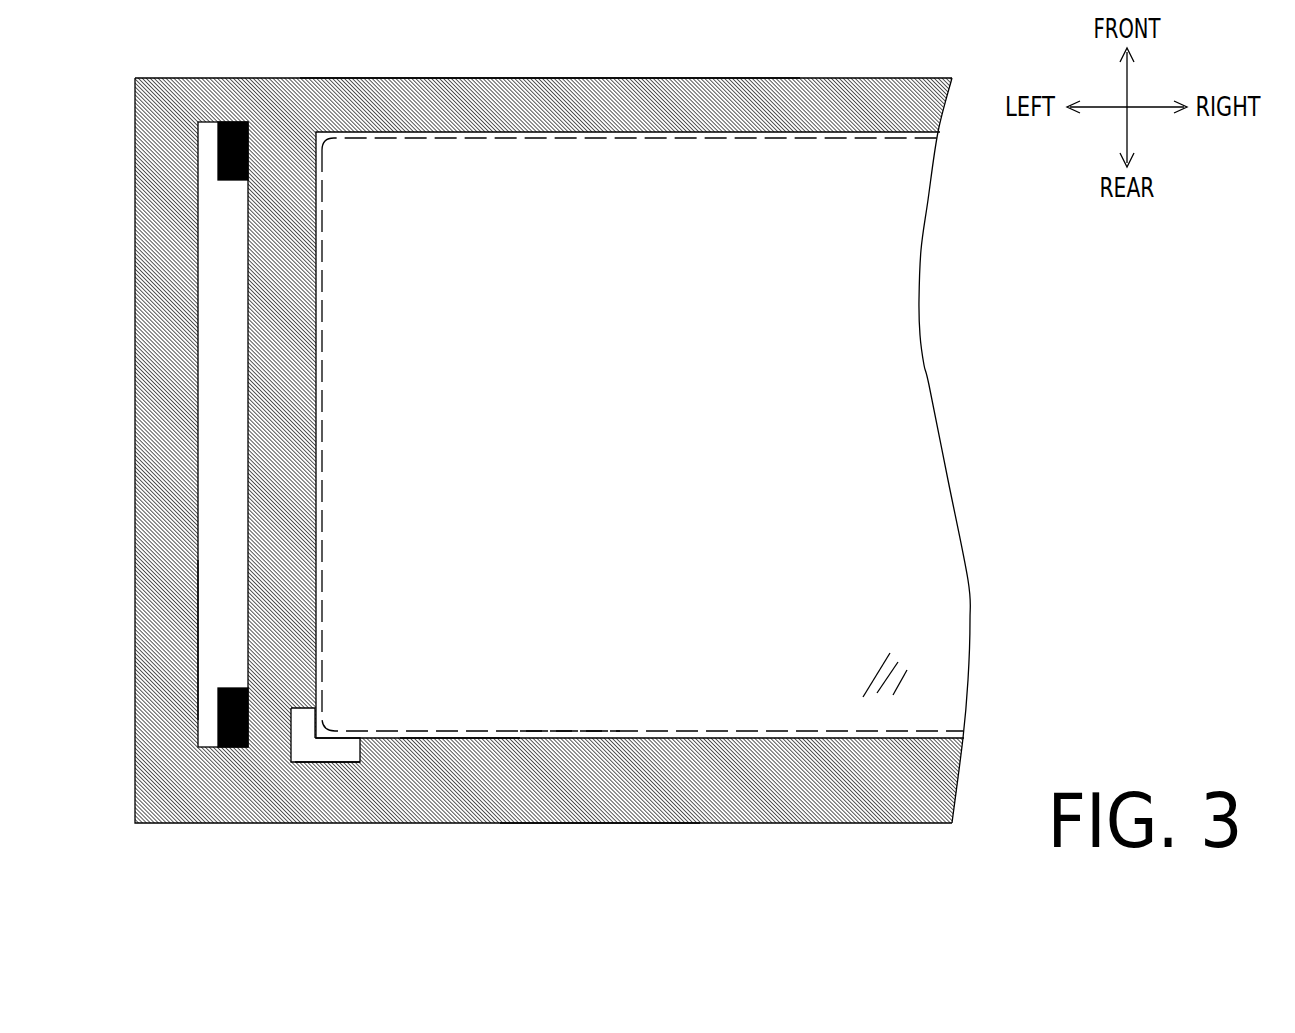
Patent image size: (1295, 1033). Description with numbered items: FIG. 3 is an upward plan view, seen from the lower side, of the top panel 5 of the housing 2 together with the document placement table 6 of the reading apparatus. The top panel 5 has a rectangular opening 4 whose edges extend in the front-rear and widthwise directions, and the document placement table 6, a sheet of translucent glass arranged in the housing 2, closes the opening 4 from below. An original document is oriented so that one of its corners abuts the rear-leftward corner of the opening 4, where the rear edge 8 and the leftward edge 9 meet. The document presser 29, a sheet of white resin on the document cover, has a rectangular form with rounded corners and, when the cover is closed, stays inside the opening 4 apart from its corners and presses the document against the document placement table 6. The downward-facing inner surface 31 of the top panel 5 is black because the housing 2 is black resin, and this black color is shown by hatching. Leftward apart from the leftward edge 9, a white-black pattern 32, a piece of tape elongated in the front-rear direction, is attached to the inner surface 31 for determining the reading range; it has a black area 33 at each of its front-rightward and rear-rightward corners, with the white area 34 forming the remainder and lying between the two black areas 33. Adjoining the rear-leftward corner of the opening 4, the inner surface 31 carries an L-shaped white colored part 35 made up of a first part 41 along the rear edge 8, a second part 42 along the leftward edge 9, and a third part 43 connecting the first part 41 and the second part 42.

The housing 2 is at (648, 78).
The opening 4 is at (718, 136).
The top panel 5 is at (540, 97).
The document placement table 6 is at (905, 370).
The rear edge 8 is at (458, 737).
The leftward edge 9 is at (320, 610).
The document presser 29 is at (540, 728).
The inner surface 31 is at (588, 790).
The white-black pattern 32 is at (197, 645).
The black area 33 is at (220, 150).
The white area 34 is at (213, 432).
The colored part 35 is at (317, 770).
The first part 41 is at (350, 753).
The second part 42 is at (305, 713).
The third part 43 is at (298, 755).